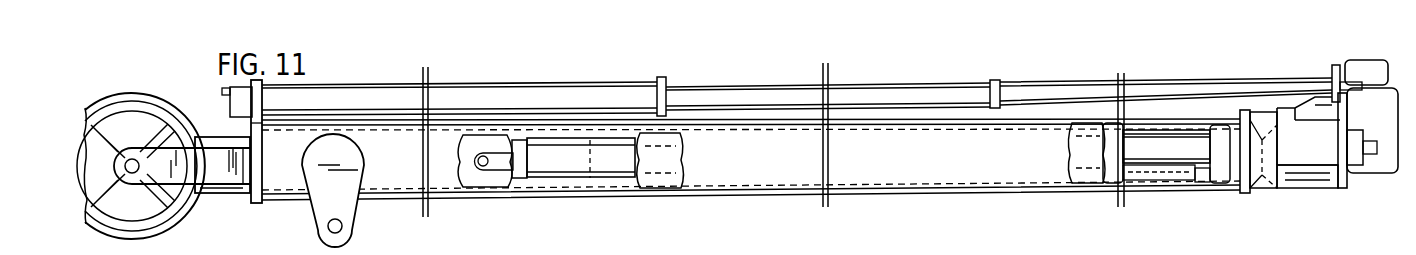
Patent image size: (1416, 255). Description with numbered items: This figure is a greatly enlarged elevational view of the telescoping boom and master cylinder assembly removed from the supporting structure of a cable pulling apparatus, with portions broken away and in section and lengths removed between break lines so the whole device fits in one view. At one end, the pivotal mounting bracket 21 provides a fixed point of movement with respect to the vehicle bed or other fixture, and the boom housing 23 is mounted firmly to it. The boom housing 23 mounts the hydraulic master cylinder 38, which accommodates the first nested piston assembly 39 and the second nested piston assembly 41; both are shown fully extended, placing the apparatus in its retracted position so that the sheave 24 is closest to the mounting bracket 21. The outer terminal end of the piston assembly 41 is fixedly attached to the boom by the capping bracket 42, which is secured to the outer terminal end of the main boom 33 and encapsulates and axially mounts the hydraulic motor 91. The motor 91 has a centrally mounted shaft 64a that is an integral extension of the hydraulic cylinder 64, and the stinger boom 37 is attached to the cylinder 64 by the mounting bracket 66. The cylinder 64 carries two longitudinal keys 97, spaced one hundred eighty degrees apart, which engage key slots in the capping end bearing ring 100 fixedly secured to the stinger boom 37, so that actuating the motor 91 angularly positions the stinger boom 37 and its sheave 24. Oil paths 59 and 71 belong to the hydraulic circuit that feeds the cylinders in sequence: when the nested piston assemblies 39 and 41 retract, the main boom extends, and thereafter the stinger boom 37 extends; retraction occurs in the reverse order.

The sheave 24 is at (167, 228).
The pivotal mounting bracket 21 is at (313, 226).
The stinger boom 37 is at (227, 188).
The hydraulic master cylinder 38 is at (374, 92).
The first nested piston assembly 39 is at (775, 67).
The second nested piston assembly 41 is at (1090, 67).
The main boom 33 is at (1018, 183).
The mounting bracket 66 is at (480, 180).
The boom housing 23 is at (550, 193).
The hydraulic cylinder 64 is at (613, 167).
The shaft 64a is at (1223, 158).
The longitudinal extending keys 97 is at (1140, 130).
The capping end bearing ring 100 is at (1203, 183).
The hydraulic motor 91 is at (1293, 184).
The capping bracket 42 is at (1320, 156).
The oil path 59 is at (1362, 62).
The oil path 71 is at (1383, 175).